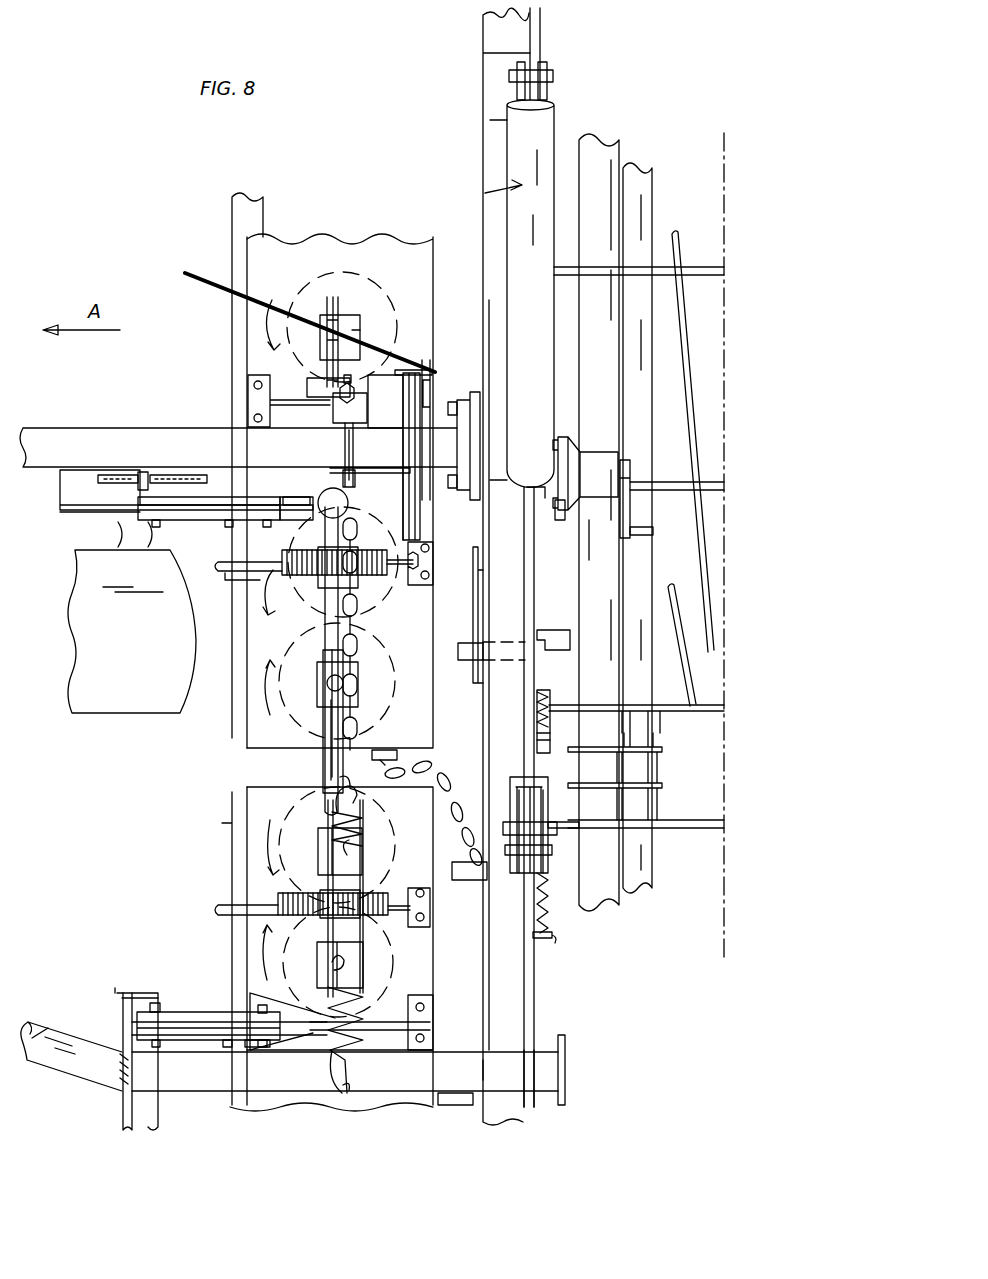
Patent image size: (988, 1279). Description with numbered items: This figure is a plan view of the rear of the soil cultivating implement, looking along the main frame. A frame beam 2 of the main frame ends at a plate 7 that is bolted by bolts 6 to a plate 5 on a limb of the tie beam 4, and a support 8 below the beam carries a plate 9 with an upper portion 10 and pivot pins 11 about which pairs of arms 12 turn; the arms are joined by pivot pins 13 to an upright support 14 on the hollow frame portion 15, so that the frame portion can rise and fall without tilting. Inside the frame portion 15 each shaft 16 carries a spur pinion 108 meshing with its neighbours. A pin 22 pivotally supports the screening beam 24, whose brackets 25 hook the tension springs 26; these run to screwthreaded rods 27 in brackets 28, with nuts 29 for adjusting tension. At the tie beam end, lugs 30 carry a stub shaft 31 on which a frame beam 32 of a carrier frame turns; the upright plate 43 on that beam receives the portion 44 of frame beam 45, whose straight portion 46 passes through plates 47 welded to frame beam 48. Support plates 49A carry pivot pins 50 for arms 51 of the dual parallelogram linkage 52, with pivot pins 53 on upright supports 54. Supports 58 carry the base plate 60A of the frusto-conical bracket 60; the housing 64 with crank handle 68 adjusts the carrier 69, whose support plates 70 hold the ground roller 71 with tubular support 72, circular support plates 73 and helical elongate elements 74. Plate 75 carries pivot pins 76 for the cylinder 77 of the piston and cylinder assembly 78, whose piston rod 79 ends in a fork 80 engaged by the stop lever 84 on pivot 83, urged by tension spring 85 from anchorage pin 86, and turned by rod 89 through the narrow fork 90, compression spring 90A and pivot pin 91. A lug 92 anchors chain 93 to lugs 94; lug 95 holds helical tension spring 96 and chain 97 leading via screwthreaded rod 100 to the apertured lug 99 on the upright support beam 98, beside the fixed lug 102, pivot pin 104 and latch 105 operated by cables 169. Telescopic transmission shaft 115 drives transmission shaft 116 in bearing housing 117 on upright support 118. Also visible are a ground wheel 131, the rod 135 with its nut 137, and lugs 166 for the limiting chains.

The frame beam 2 is at (115, 427).
The tie beam 4 is at (483, 83).
The plate 5 is at (490, 470).
The bolts 6 is at (452, 490).
The plate 7 is at (456, 445).
The support 8 is at (78, 464).
The plate 9 is at (80, 519).
The upper portion 10 is at (124, 568).
The pivot pins 11 is at (160, 578).
The arms 12 is at (210, 497).
The pivot pins 13 is at (305, 520).
The upright support 14 is at (300, 495).
The hollow frame portion 15 is at (290, 262).
The shaft 16 is at (370, 332).
The pin 22 is at (222, 528).
The beam 24 is at (232, 205).
The brackets 25 is at (218, 568).
The tension springs 26 is at (282, 573).
The screwthreaded rods 27 is at (430, 925).
The brackets 28 is at (400, 585).
The nut 29 is at (400, 920).
The lugs 30 is at (450, 612).
The stub shaft 31 is at (456, 655).
The frame beam 32 is at (483, 693).
The upright plate 43 is at (536, 992).
The portion 44 is at (202, 1100).
The frame beam 45 is at (47, 1016).
The straight portion 46 is at (52, 1045).
The plates 47 is at (128, 990).
The frame beam 48 is at (135, 1112).
The support plates 49A is at (172, 1017).
The pivot pins 50 is at (158, 1003).
The arms 51 is at (222, 1015).
The dual parallelogram linkage 52 is at (195, 1046).
The pivot pins 53 is at (262, 1048).
The upright supports 54 is at (428, 1023).
The supports 58 is at (538, 493).
The frusto-conical bracket 60 is at (618, 520).
The base plate 60A is at (558, 520).
The housing 64 is at (600, 445).
The crank handle 68 is at (653, 531).
The carrier 69 is at (606, 148).
The support plates 70 is at (660, 778).
The ground roller 71 is at (733, 350).
The tubular support 72 is at (638, 228).
The support plates 73 is at (692, 263).
The elongate elements 74 is at (690, 335).
The plate 75 is at (542, 32).
The pivot pins 76 is at (556, 76).
The cylinder 77 is at (508, 134).
The piston and cylinder assembly 78 is at (482, 189).
The piston rod 79 is at (530, 540).
The fork 80 is at (505, 778).
The pivot 83 is at (510, 880).
The stop lever 84 is at (516, 882).
The tension spring 85 is at (550, 912).
The anchorage pin 86 is at (553, 944).
The rod 89 is at (537, 738).
The narrow fork 90 is at (555, 690).
The helical compression spring 90A is at (537, 710).
The pivot pin 91 is at (560, 628).
The lug 92 is at (392, 748).
The chain 93 is at (438, 790).
The lugs 94 is at (470, 858).
The lug 95 is at (345, 1110).
The helical tension spring 96 is at (316, 855).
The chain 97 is at (362, 640).
The upright support beam 98 is at (400, 368).
The apertured lug 99 is at (340, 440).
The screwthreaded rod 100 is at (410, 340).
The lug 102 is at (385, 420).
The pivot pin 104 is at (430, 378).
The latch 105 is at (401, 447).
The pinion 108 is at (305, 295).
The telescopic transmission shaft 115 is at (322, 712).
The transmission shaft 116 is at (345, 300).
The bearing housing 117 is at (312, 378).
The upright support 118 is at (248, 400).
The ground wheel 131 is at (85, 613).
The rod 135 is at (115, 475).
The nut 137 is at (150, 470).
The lugs 166 is at (350, 497).
The cables 169 is at (205, 290).